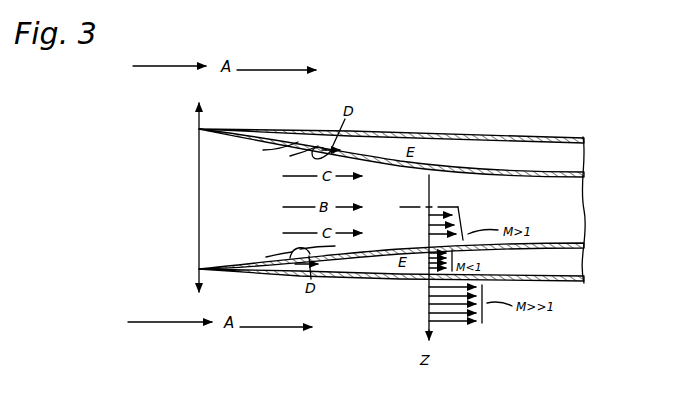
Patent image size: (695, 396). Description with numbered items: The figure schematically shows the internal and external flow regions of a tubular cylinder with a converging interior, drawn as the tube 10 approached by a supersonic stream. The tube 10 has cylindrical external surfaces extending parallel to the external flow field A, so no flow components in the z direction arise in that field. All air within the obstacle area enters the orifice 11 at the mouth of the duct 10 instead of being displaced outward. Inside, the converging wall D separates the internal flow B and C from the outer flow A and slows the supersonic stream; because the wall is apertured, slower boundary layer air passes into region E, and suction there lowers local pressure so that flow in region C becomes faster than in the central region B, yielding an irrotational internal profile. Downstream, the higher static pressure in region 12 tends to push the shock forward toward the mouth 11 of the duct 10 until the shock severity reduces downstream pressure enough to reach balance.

The tube 10 is at (426, 130).
The orifice 11 is at (196, 212).
The downstream region 12 is at (464, 207).